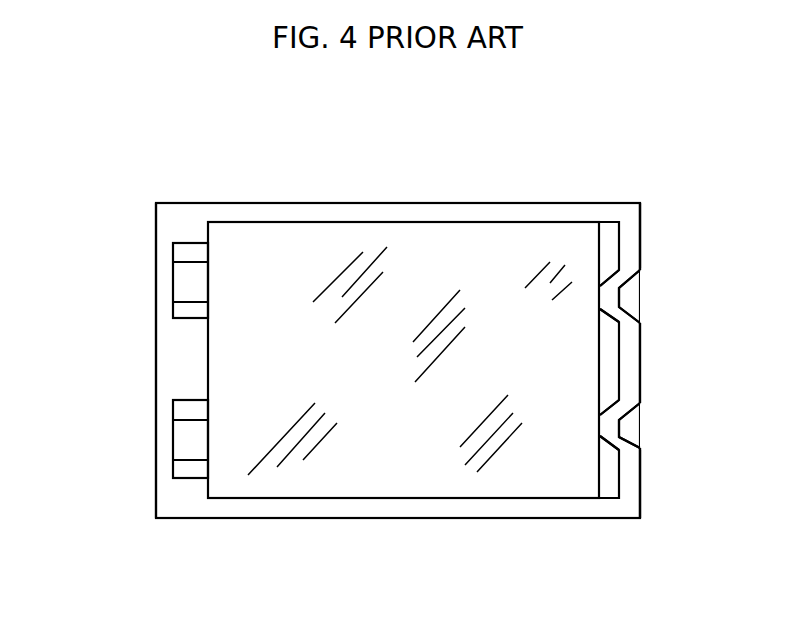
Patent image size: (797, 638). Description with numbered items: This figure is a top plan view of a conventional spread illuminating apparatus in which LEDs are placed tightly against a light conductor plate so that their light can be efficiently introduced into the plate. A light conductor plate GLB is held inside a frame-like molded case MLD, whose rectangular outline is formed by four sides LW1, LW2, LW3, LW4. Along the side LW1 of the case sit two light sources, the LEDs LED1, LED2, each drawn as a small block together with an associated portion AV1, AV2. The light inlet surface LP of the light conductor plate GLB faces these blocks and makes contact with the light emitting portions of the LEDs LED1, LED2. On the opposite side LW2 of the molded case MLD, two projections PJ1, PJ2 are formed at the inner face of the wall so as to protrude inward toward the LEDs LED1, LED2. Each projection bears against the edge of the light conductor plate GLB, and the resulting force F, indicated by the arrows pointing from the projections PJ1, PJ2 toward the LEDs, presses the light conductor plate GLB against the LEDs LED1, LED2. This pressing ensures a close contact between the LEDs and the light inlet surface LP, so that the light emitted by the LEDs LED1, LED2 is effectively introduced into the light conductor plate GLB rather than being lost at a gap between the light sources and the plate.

The frame-like molded case MLD is at (200, 203).
The light conductor plate GLB is at (448, 240).
The light inlet surface LP is at (207, 252).
The first adhesive layer AV1 is at (183, 253).
The second adhesive layer AV2 is at (183, 412).
The LED LED1 is at (182, 281).
The LED LED2 is at (183, 442).
The first side wall LW1 is at (130, 352).
The side of the molded case LW2 is at (661, 355).
The third side wall LW3 is at (338, 180).
The fourth side wall LW4 is at (478, 538).
The projection PJ1 is at (630, 297).
The projection PJ2 is at (630, 425).
The force F is at (600, 297).